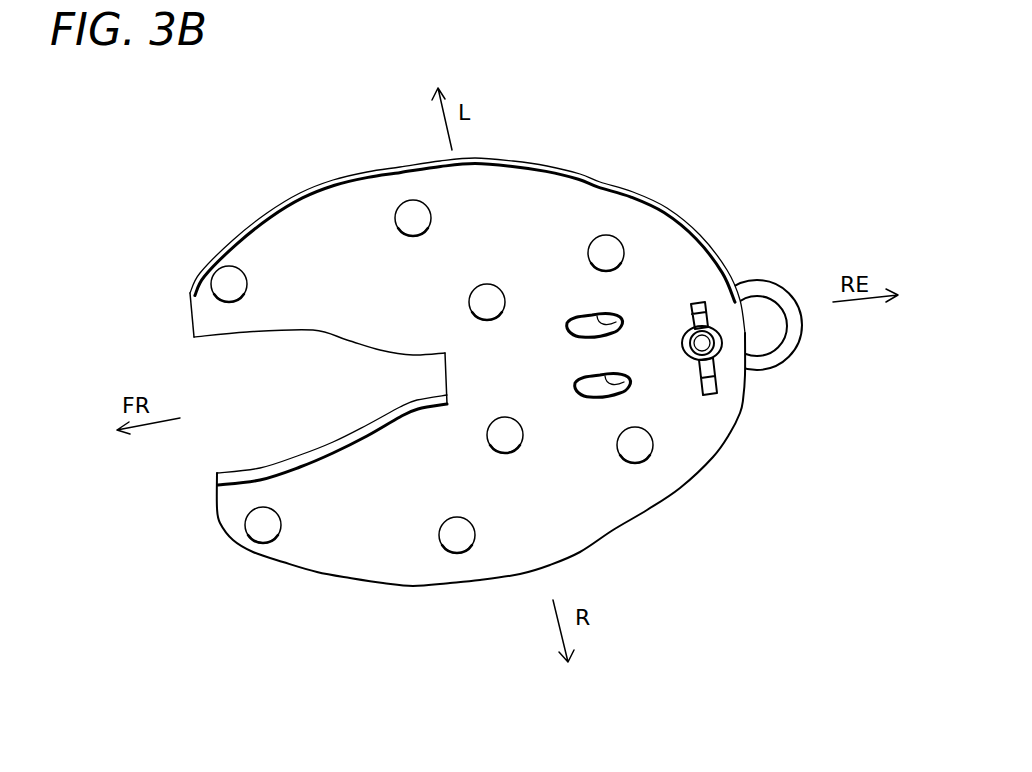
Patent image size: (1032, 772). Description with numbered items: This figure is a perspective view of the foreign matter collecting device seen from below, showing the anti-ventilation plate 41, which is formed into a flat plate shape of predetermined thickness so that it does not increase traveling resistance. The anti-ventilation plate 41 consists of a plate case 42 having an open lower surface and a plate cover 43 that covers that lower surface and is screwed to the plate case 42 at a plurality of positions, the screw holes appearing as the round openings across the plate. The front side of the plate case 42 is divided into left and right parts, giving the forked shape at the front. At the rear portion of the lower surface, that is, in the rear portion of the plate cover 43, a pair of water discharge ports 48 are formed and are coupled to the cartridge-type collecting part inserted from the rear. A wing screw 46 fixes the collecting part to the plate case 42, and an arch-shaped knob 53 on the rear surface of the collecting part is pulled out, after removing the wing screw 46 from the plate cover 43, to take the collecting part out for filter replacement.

The anti-ventilation plate 41 is at (561, 142).
The plate case 42 is at (387, 413).
The plate cover 43 is at (593, 208).
The wing screw 46 is at (720, 368).
The water discharge ports 48 is at (621, 377).
The knob 53 is at (801, 346).